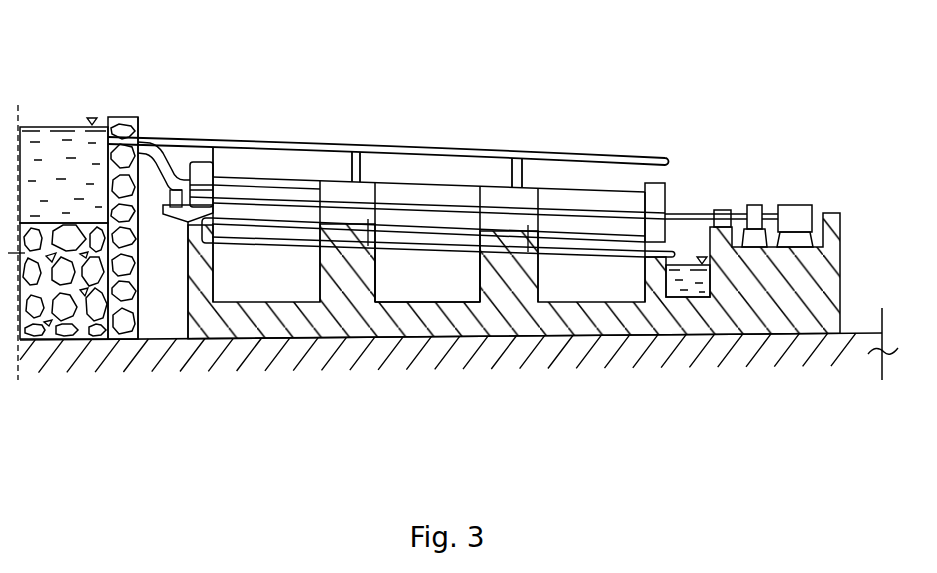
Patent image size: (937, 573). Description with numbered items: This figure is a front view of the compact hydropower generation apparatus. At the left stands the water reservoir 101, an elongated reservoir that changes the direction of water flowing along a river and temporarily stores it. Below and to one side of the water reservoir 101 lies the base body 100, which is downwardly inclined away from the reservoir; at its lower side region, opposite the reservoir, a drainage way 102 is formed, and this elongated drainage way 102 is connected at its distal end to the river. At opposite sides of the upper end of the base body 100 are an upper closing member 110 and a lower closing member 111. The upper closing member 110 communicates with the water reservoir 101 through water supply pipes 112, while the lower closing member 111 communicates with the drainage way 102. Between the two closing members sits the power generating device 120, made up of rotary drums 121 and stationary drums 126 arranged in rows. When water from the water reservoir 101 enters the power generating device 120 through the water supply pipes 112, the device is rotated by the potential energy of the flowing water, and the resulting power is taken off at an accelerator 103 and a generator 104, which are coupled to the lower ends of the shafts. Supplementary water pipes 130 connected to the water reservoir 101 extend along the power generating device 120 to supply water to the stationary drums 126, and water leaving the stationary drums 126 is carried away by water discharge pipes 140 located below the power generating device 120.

The base body 100 is at (552, 306).
The water reservoir 101 is at (56, 126).
The drainage way 102 is at (681, 284).
The accelerator 103 is at (754, 205).
The generator 104 is at (794, 205).
The upper closing member 110 is at (202, 162).
The lower closing member 111 is at (660, 192).
The water supply pipe 112 is at (168, 150).
The power generating device 120 is at (432, 98).
The rotary drum 121 is at (272, 177).
The stationary drum 126 is at (496, 185).
The supplementary water pipe 130 is at (332, 147).
The water discharge pipe 140 is at (433, 250).